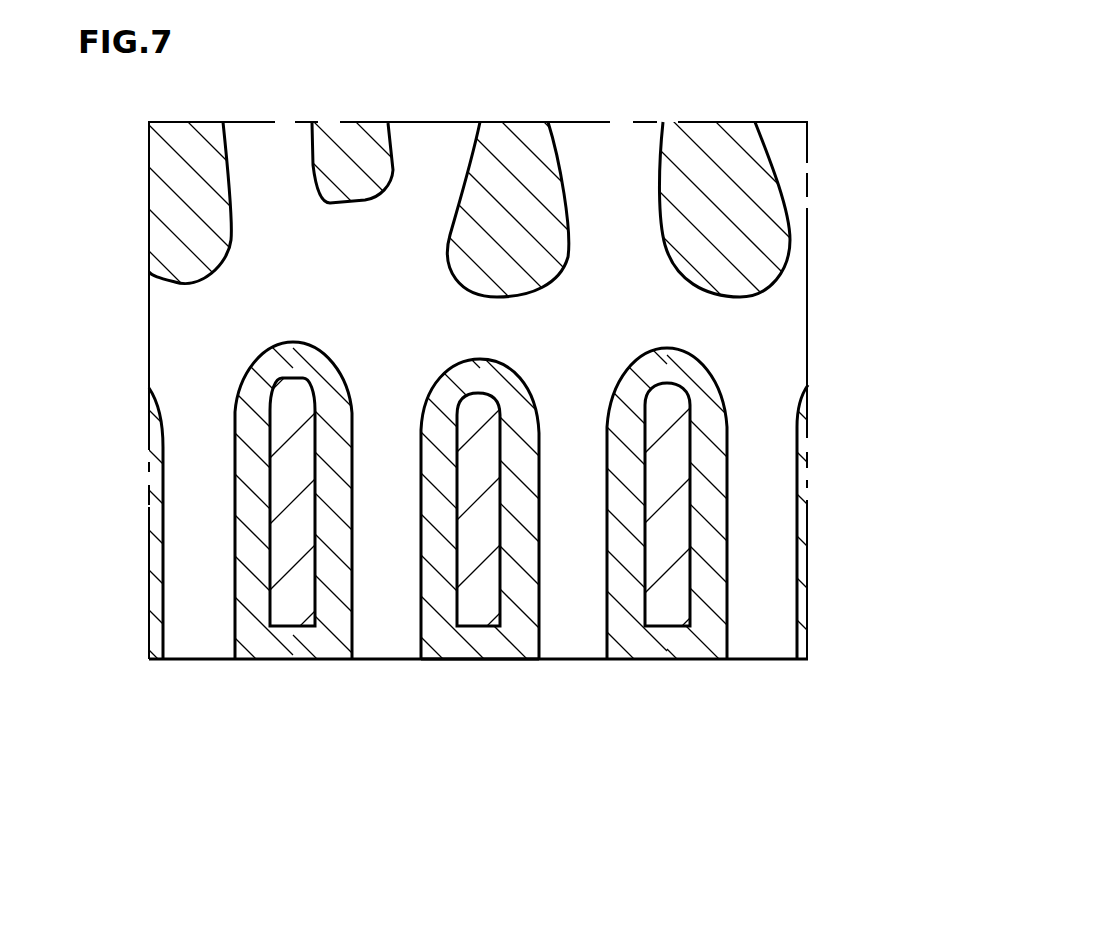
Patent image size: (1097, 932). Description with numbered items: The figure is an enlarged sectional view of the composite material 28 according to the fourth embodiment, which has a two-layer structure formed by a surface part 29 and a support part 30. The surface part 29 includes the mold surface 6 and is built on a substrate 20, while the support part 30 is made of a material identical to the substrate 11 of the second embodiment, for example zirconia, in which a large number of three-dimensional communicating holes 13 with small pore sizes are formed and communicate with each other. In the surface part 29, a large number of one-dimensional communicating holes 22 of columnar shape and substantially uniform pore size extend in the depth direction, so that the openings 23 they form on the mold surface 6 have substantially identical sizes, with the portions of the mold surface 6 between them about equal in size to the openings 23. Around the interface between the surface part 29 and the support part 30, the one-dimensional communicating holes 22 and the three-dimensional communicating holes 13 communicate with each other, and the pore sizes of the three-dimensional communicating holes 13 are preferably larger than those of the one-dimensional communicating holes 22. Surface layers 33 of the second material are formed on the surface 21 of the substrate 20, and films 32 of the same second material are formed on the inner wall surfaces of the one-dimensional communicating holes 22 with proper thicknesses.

The mold surface 6 is at (688, 660).
The substrate 11 is at (177, 148).
The three-dimensional communicating holes 13 is at (428, 153).
The substrate 20 is at (290, 545).
The surface 21 is at (480, 628).
The one-dimensional communicating holes 22 is at (388, 578).
The openings 23 is at (279, 516).
The composite material 28 is at (773, 92).
The surface part 29 is at (840, 355).
The support part 30 is at (840, 345).
The films 32 is at (525, 553).
The surface layers 33 is at (469, 645).